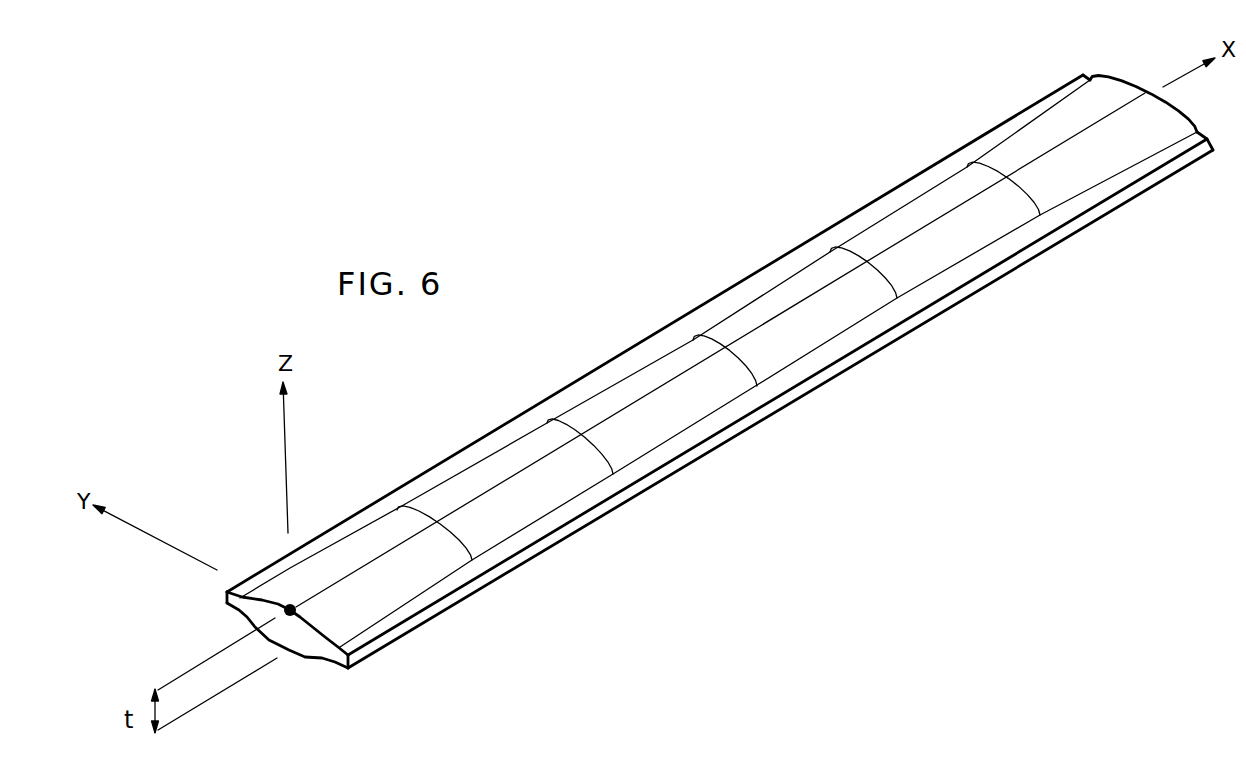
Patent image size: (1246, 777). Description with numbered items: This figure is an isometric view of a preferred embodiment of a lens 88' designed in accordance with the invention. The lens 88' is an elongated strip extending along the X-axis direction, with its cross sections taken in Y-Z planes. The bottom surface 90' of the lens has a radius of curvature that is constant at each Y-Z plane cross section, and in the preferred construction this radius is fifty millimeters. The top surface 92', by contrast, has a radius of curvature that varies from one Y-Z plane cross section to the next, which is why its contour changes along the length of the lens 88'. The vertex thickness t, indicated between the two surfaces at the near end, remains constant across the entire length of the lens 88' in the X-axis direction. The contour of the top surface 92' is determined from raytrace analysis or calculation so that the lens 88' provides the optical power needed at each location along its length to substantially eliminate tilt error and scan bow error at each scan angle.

The lens 88' is at (720, 371).
The bottom surface 90' is at (316, 668).
The top surface 92' is at (718, 361).